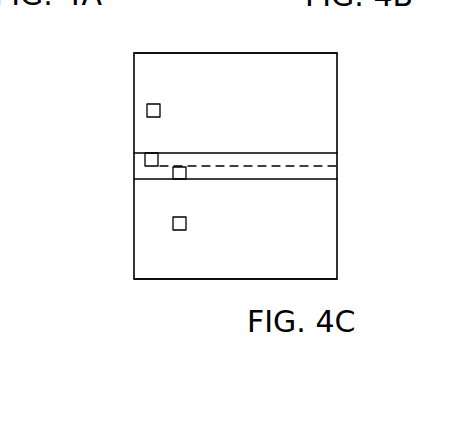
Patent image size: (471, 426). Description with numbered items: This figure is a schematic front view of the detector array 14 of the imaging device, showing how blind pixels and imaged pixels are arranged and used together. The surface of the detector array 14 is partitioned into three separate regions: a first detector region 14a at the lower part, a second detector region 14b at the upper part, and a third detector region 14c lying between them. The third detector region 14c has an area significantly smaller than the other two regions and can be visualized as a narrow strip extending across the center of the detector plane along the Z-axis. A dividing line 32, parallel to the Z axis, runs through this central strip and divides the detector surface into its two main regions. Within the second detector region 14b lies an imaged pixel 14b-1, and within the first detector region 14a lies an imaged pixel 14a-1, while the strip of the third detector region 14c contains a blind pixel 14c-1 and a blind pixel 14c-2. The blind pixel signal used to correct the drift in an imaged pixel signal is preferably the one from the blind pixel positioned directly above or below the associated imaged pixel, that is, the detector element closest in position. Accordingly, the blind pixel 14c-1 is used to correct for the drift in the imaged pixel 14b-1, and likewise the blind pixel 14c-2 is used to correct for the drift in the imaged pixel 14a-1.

The detector array 14 is at (240, 53).
The first detector region 14a is at (267, 243).
The second detector region 14b is at (267, 98).
The third detector region 14c is at (272, 160).
The imaged pixel 14a-1 is at (179, 230).
The imaged pixel 14b-1 is at (153, 104).
The blind pixel 14c-1 is at (145, 163).
The blind pixel 14c-2 is at (173, 173).
The dividing line 32 is at (257, 167).